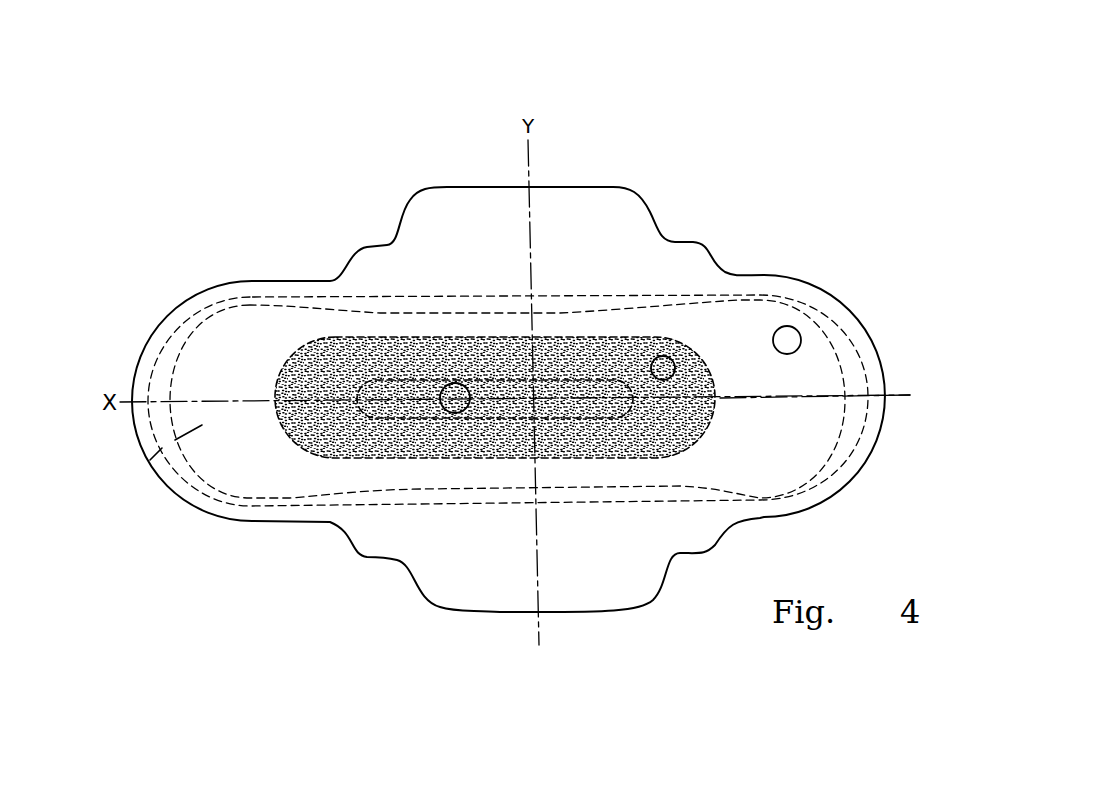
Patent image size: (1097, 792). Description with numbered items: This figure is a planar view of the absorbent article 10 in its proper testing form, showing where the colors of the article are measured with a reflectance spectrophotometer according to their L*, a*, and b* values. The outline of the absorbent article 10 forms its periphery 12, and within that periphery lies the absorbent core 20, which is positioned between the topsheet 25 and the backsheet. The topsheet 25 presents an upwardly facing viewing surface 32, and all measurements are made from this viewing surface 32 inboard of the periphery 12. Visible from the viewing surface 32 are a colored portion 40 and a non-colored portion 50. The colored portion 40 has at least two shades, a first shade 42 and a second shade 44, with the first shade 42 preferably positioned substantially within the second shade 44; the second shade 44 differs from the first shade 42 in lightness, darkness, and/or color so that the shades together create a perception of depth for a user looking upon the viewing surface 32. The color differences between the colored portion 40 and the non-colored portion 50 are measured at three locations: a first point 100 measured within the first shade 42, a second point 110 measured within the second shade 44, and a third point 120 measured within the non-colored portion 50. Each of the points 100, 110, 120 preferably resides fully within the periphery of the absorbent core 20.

The absorbent article 10 is at (688, 127).
The periphery 12 is at (203, 518).
The absorbent core 20 is at (125, 477).
The topsheet 25 is at (203, 350).
The viewing surface 32 is at (277, 477).
The colored portion 40 is at (475, 458).
The first shade 42 is at (493, 383).
The second shade 44 is at (637, 430).
The non-colored portion 50 is at (765, 457).
The first point 100 is at (443, 388).
The second point 110 is at (673, 358).
The third point 120 is at (789, 326).